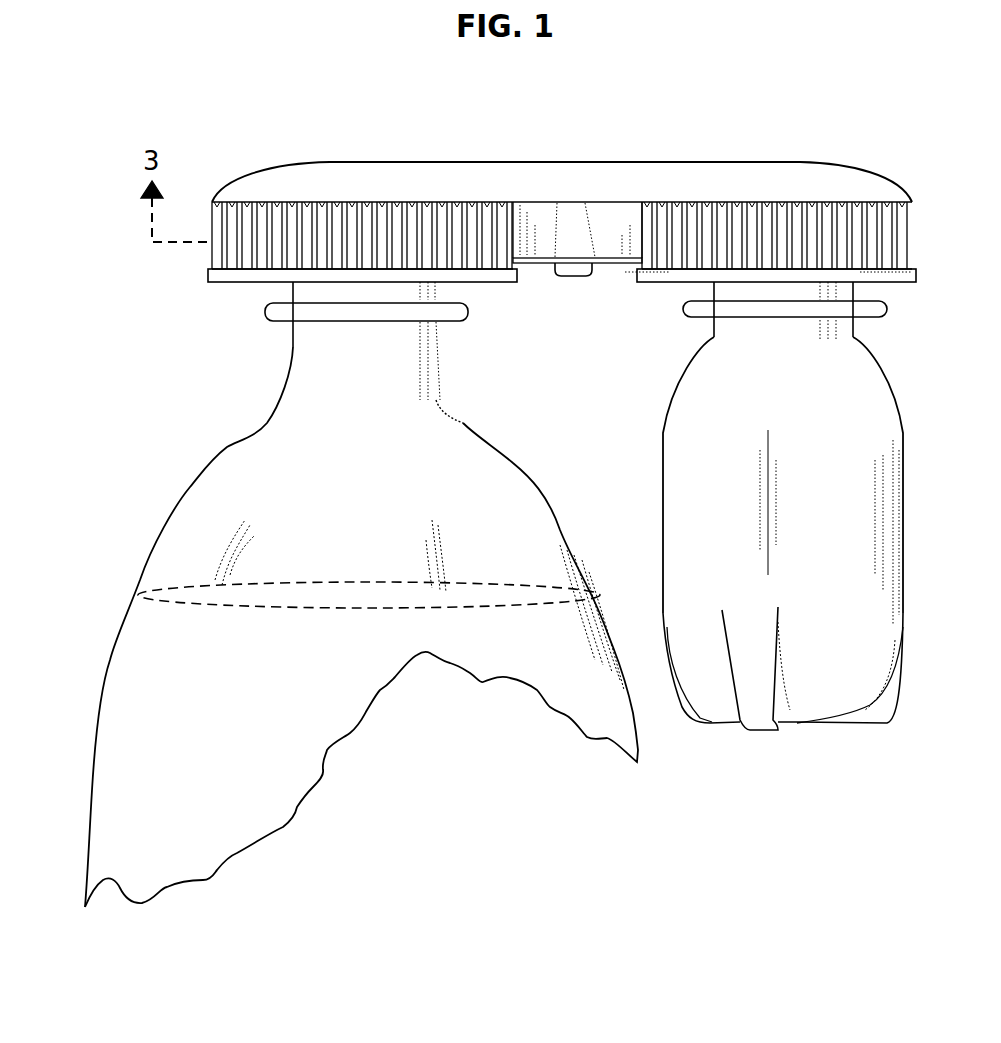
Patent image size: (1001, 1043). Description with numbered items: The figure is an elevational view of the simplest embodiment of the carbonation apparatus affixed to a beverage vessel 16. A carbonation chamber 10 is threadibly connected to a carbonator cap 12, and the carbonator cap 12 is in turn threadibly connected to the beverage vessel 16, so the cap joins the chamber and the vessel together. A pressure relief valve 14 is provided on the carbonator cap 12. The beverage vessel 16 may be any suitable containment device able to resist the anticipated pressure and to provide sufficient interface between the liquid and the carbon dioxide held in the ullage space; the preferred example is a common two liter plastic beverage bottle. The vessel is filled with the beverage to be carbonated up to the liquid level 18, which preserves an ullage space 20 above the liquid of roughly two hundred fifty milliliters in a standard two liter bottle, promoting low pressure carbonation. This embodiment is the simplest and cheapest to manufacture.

The carbonation chamber 10 is at (652, 420).
The carbonator cap 12 is at (555, 155).
The pressure relief valve 14 is at (567, 285).
The beverage vessel 16 is at (222, 452).
The liquid level 18 is at (160, 597).
The ullage space 20 is at (438, 485).